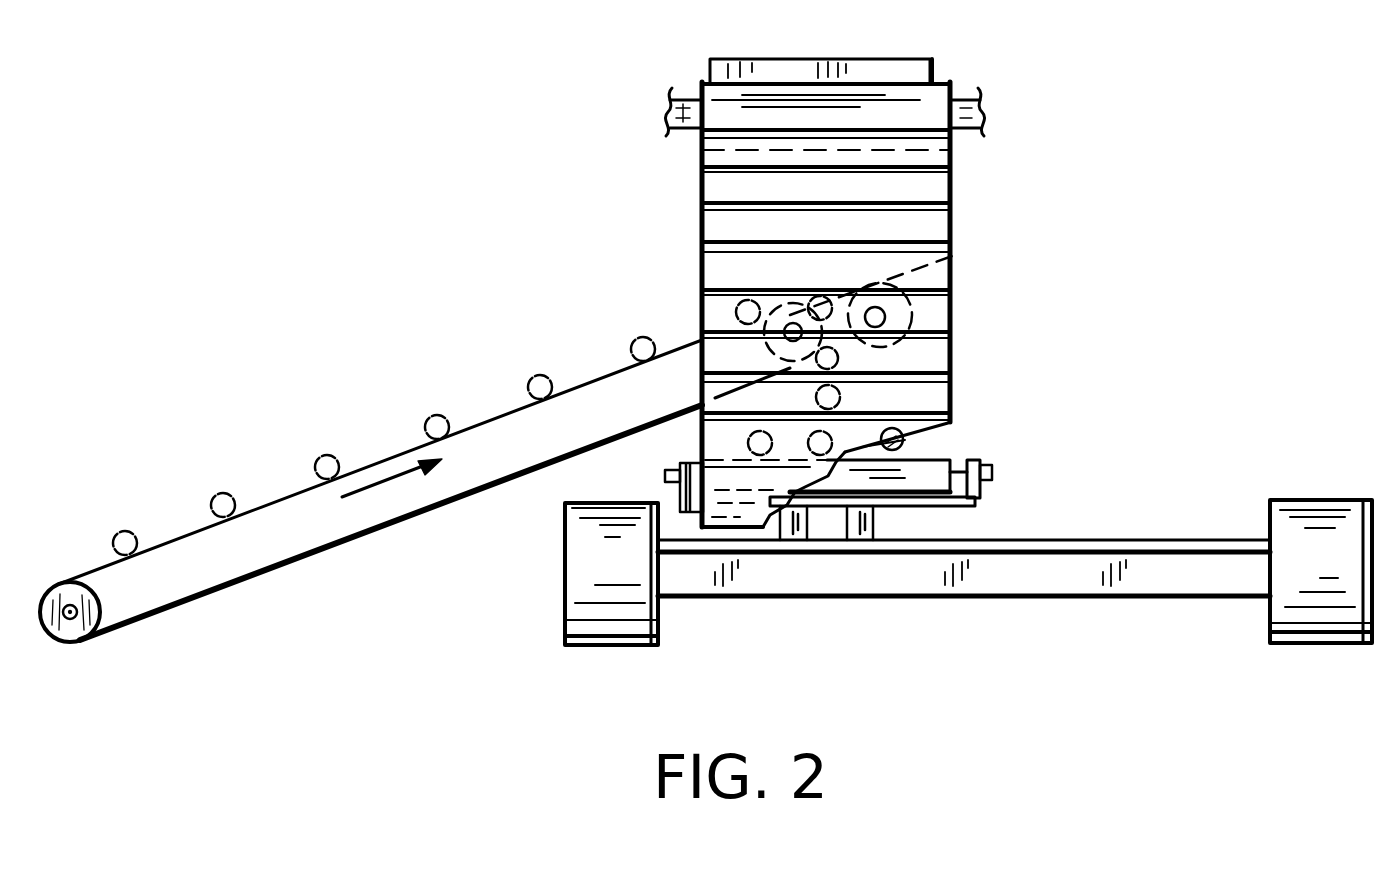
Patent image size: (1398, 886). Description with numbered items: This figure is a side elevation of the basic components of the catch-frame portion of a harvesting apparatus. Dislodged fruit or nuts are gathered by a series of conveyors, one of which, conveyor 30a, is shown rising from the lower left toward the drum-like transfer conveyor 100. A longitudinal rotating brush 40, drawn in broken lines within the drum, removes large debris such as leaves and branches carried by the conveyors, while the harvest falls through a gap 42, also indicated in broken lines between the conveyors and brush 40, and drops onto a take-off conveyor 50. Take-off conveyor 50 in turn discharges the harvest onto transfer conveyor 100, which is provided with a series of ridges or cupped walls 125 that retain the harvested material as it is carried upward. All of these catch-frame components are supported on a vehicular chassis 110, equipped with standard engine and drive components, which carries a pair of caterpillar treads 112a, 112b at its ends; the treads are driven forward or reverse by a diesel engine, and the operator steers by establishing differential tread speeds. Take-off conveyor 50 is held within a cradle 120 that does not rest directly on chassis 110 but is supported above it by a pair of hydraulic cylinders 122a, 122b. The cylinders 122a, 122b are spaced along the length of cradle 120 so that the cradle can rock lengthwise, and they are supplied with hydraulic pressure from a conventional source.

The conveyor 30a is at (175, 582).
The transfer conveyor 100 is at (717, 185).
The ridges or cupped walls 125 is at (720, 257).
The gap 42 is at (955, 255).
The longitudinal rotating brush 40 is at (913, 307).
The take-off conveyor 50 is at (937, 472).
The cradle 120 is at (992, 492).
The hydraulic cylinder 122a is at (790, 527).
The hydraulic cylinder 122b is at (880, 530).
The vehicular chassis 110 is at (1140, 553).
The caterpillar tread 112a is at (575, 562).
The caterpillar tread 112b is at (1317, 520).